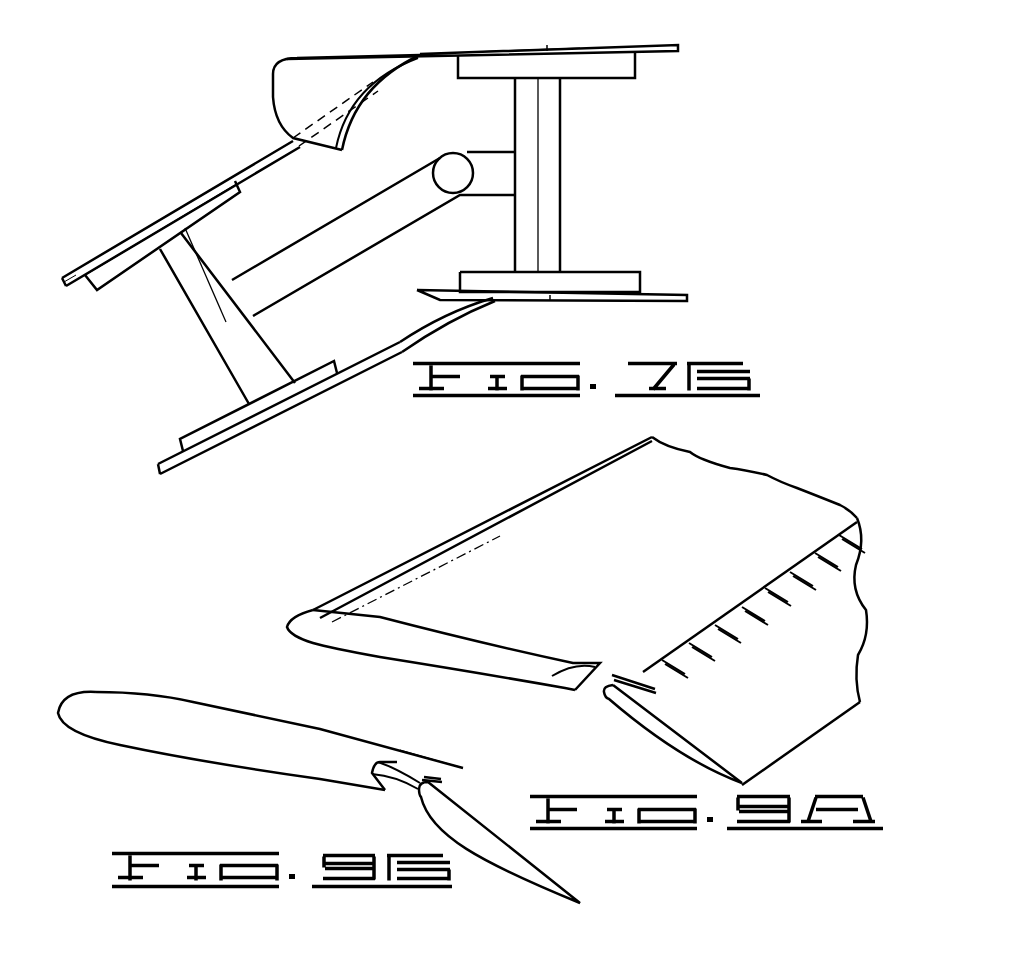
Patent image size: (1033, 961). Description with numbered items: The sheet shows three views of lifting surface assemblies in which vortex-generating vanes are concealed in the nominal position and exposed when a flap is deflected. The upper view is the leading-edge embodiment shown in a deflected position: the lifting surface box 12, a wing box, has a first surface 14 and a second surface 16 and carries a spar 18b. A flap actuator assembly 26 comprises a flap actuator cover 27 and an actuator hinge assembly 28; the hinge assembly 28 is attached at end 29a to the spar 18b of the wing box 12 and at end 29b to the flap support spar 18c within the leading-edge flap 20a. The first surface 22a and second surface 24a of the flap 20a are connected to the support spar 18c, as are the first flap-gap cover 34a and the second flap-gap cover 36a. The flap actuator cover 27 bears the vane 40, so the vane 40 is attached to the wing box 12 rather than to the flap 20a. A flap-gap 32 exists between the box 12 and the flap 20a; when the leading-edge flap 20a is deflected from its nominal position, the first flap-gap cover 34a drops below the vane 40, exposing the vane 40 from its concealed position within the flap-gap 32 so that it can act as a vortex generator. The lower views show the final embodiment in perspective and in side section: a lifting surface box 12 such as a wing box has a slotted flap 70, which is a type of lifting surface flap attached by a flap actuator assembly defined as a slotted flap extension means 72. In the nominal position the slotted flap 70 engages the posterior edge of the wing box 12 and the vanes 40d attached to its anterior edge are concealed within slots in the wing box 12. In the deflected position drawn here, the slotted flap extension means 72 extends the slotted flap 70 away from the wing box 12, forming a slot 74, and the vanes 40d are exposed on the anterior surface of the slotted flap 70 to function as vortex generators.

In FIG. 7B, the lifting surface box 12 is at (581, 38).
In FIG. 9A, the lifting surface box 12 is at (590, 577).
In FIG. 9B, the lifting surface box 12 is at (236, 703).
In FIG. 7B, the first surface 14 is at (645, 47).
In FIG. 7B, the second surface 16 is at (640, 302).
In FIG. 7B, the spar 18b is at (561, 138).
In FIG. 7B, the flap support spar 18c is at (192, 306).
In FIG. 7B, the leading-edge flap 20a is at (131, 204).
In FIG. 7B, the first surface of the leading-edge flap 22a is at (121, 240).
In FIG. 7B, the second surface of the leading-edge flap 24a is at (208, 454).
In FIG. 7B, the flap actuator assembly 26 is at (472, 41).
In FIG. 7B, the flap actuator cover 27 is at (488, 53).
In FIG. 7B, the actuator hinge assembly 28 is at (393, 181).
In FIG. 7B, the hinge assembly end 29a is at (539, 172).
In FIG. 7B, the hinge assembly end 29b is at (224, 322).
In FIG. 7B, the flap-gap 32 is at (270, 204).
In FIG. 7B, the first flap-gap cover 34a is at (207, 188).
In FIG. 7B, the second flap-gap cover 36a is at (333, 386).
In FIG. 7B, the vane 40 is at (271, 99).
In FIG. 9A, the vanes 40d is at (603, 690).
In FIG. 9B, the vanes 40d is at (441, 781).
In FIG. 9A, the slotted flap 70 is at (670, 708).
In FIG. 9B, the slotted flap 70 is at (442, 822).
In FIG. 9B, the slotted flap extension means 72 is at (392, 770).
In FIG. 9B, the slot 74 is at (410, 767).